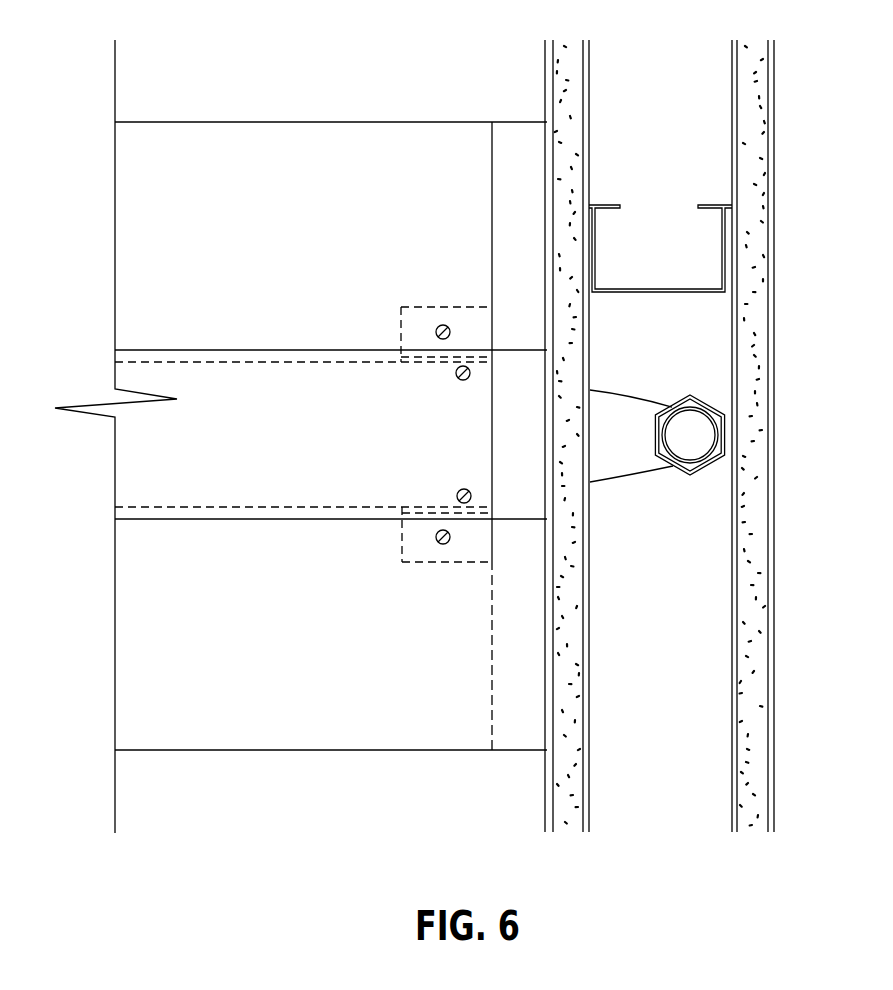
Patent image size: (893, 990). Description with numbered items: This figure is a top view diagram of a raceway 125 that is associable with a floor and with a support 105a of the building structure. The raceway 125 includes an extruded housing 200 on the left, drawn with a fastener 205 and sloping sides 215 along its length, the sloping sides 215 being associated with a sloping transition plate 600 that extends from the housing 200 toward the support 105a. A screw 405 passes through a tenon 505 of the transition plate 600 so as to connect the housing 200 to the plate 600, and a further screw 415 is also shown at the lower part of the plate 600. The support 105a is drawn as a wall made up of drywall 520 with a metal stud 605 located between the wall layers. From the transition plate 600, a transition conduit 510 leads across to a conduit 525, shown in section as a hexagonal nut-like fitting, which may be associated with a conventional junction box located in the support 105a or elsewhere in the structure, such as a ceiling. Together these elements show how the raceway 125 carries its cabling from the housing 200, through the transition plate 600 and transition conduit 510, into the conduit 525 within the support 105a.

The support 105a is at (683, 77).
The raceway 125 is at (318, 385).
The extruded housing 200 is at (200, 352).
The fastener 205 is at (132, 463).
The sloping sides 215 is at (136, 665).
The screw 405 is at (443, 345).
The screw 415 is at (460, 489).
The tenon 505 is at (421, 318).
The transition conduit 510 is at (627, 414).
The drywall 520 is at (773, 490).
The conduit 525 is at (723, 398).
The sloping transition plate 600 is at (507, 443).
The metal stud 605 is at (703, 294).